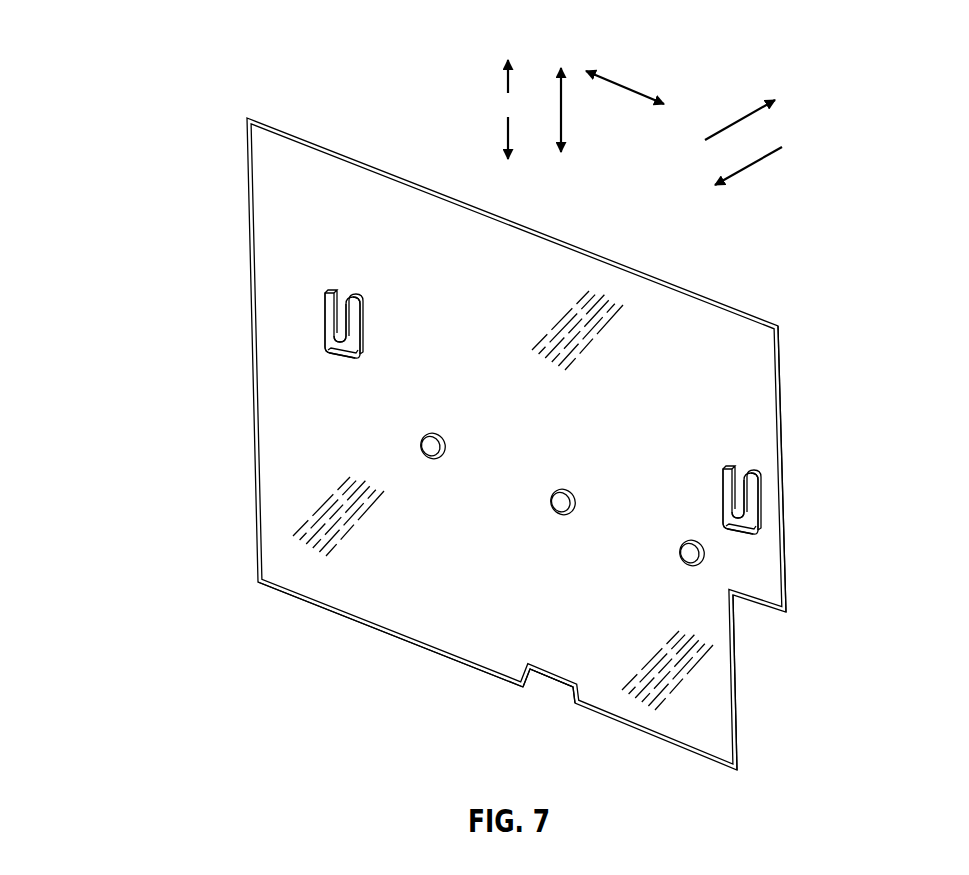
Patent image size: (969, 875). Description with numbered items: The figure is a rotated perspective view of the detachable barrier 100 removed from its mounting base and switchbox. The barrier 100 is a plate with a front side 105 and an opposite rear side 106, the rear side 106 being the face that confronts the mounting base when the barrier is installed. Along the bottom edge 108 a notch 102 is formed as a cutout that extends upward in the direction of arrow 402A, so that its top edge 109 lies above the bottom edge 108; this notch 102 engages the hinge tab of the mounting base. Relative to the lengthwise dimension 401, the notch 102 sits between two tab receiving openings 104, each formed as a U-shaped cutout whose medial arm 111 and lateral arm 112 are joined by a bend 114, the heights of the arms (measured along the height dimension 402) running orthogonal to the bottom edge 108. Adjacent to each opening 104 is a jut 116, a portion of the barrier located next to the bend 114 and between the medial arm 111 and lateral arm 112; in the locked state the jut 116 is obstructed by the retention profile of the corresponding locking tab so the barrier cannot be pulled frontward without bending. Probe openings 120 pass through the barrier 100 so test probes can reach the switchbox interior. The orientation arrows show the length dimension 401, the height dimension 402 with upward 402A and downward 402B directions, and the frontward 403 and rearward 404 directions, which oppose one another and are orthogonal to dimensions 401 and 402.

The detachable barrier 100 is at (224, 46).
The notch 102 is at (540, 690).
The tab receiving opening 104 is at (334, 358).
The front side 105 is at (750, 366).
The rear side 106 is at (744, 682).
The bottom edge 108 is at (374, 636).
The top edge 109 is at (554, 688).
The medial arm 111 is at (356, 315).
The lateral arm 112 is at (333, 325).
The bend 114 is at (352, 346).
The jut 116 is at (340, 303).
The probe opening 120 is at (440, 430).
The lengthwise dimension 401 is at (626, 88).
The height dimension 402 is at (564, 108).
The upward orientation 402A is at (506, 80).
The downward orientation 402B is at (506, 138).
The frontward orientation 403 is at (743, 170).
The rearward orientation 404 is at (733, 123).